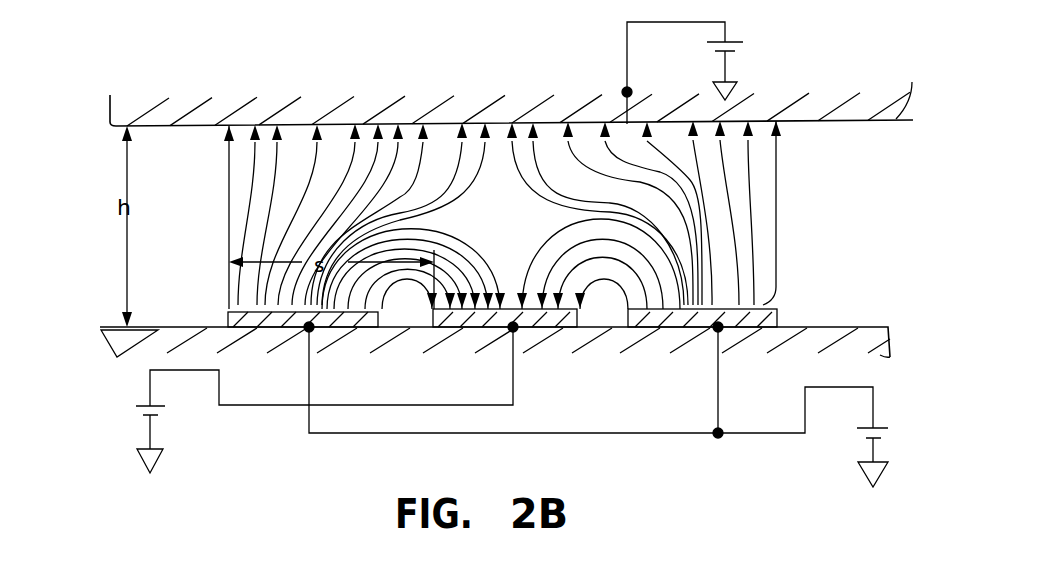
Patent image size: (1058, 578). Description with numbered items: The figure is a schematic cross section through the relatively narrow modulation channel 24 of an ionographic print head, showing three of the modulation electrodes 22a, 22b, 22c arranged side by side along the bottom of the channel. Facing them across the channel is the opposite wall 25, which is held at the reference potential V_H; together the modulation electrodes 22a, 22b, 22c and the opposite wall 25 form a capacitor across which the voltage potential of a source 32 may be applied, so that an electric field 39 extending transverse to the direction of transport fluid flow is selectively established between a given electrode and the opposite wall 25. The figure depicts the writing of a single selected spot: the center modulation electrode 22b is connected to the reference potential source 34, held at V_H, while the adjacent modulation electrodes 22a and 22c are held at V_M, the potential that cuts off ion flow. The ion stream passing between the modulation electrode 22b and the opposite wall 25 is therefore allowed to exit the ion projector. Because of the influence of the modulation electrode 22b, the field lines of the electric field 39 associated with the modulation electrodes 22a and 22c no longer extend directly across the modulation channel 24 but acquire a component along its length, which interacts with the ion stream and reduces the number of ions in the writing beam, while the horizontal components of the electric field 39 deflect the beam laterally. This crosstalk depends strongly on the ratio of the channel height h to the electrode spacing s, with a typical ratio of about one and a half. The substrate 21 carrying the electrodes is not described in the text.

The opposite wall 25 is at (342, 93).
The electric field 39 is at (777, 196).
The modulation channel 24 is at (866, 217).
The modulation electrode 22a is at (783, 281).
The modulation electrode 22b is at (457, 328).
The modulation electrode 22c is at (345, 328).
The substrate 21 is at (592, 355).
The reference potential source 34 is at (166, 406).
The source 32 is at (880, 426).